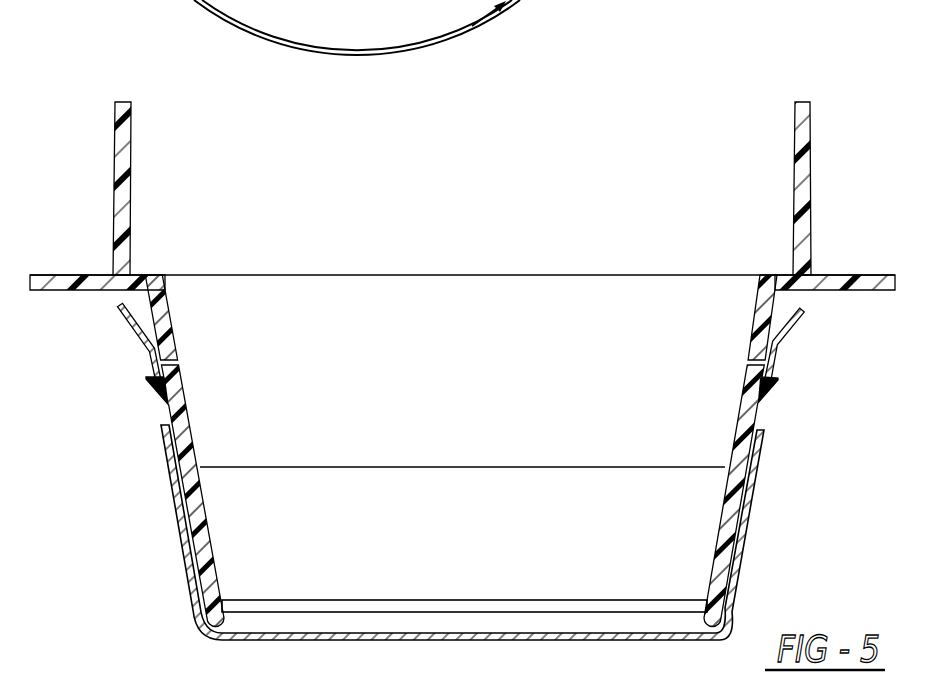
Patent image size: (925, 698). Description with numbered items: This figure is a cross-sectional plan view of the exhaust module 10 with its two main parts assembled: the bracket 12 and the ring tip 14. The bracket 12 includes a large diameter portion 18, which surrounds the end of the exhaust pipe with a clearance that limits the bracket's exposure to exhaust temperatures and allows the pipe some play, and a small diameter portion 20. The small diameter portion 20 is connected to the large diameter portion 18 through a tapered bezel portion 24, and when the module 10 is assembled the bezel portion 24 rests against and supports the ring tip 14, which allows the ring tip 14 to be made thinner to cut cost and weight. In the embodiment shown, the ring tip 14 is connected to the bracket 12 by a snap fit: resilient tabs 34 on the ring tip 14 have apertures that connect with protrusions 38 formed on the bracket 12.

The exhaust module 10 is at (142, 2).
The bracket 12 is at (812, 194).
The ring tip 14 is at (750, 517).
The large diameter portion 18 is at (676, 126).
The small diameter portion 20 is at (398, 644).
The bezel portion 24 is at (192, 388).
The resilient tabs 34 is at (795, 325).
The protrusions 38 is at (158, 385).